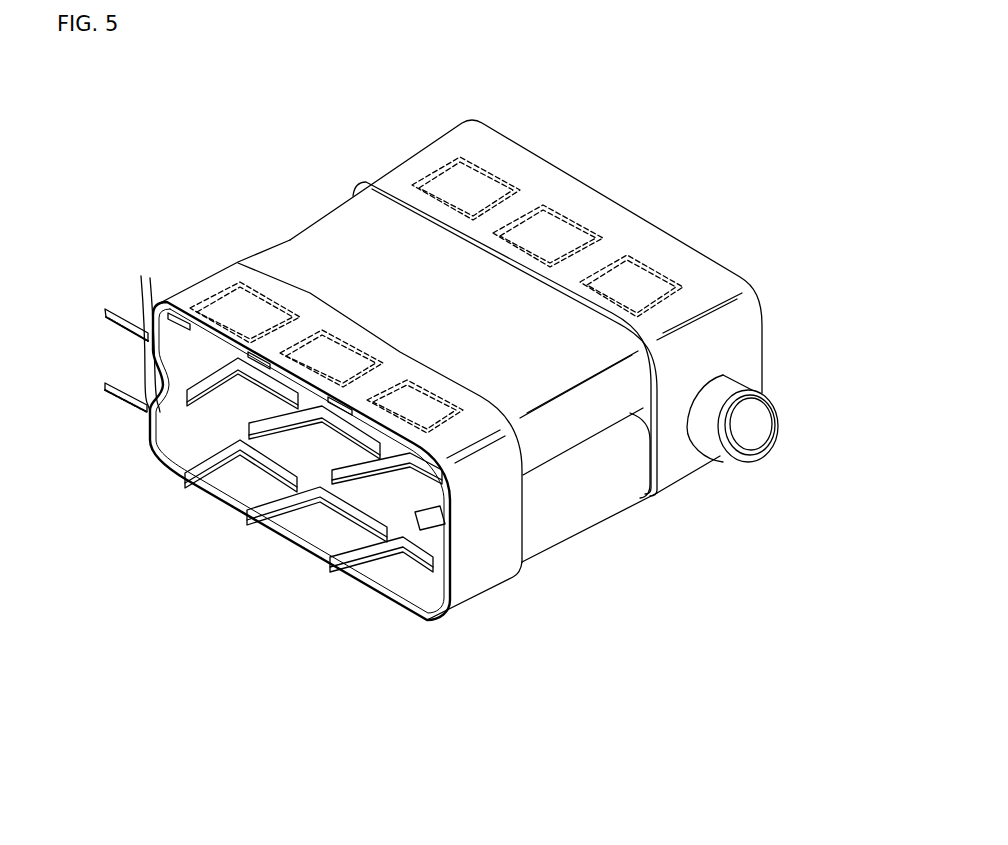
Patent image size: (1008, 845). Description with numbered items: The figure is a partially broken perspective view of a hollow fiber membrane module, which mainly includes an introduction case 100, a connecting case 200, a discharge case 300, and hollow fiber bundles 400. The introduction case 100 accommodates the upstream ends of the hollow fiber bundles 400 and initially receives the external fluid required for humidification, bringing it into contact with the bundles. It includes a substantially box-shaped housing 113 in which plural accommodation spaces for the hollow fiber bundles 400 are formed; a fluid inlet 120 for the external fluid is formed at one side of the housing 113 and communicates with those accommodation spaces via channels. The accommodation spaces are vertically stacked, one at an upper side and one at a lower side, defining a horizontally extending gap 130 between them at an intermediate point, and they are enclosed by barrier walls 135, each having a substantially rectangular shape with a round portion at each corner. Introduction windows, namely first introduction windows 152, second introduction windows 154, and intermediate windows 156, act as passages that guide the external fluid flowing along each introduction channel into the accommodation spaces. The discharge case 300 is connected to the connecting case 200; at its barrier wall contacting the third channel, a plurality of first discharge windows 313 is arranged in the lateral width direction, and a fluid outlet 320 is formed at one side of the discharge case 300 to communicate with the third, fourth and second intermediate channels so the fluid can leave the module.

The introduction case 100 is at (510, 592).
The housing 113 is at (200, 283).
The fluid inlet 120 is at (123, 378).
The gap 130 is at (297, 535).
The barrier wall 135 is at (447, 585).
The first introduction windows 152 is at (417, 387).
The second introduction windows 154 is at (377, 583).
The intermediate windows 156 is at (217, 413).
The connecting case 200 is at (593, 495).
The discharge case 300 is at (713, 241).
The first discharge windows 313 is at (627, 263).
The fluid outlet 320 is at (742, 435).
The hollow fiber bundles 400 is at (173, 327).